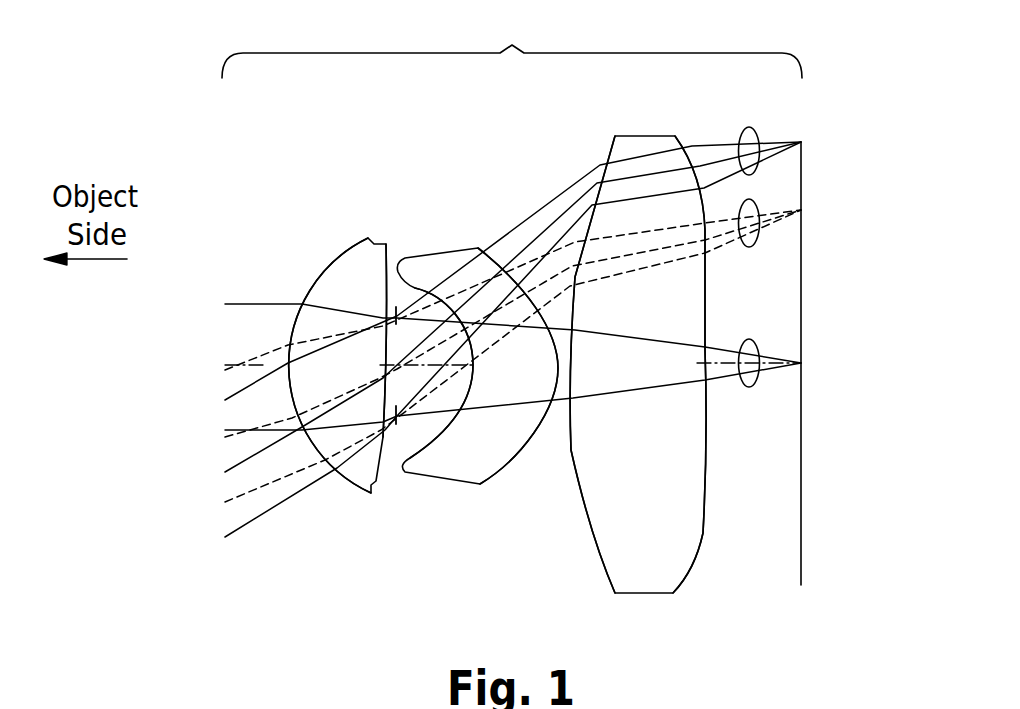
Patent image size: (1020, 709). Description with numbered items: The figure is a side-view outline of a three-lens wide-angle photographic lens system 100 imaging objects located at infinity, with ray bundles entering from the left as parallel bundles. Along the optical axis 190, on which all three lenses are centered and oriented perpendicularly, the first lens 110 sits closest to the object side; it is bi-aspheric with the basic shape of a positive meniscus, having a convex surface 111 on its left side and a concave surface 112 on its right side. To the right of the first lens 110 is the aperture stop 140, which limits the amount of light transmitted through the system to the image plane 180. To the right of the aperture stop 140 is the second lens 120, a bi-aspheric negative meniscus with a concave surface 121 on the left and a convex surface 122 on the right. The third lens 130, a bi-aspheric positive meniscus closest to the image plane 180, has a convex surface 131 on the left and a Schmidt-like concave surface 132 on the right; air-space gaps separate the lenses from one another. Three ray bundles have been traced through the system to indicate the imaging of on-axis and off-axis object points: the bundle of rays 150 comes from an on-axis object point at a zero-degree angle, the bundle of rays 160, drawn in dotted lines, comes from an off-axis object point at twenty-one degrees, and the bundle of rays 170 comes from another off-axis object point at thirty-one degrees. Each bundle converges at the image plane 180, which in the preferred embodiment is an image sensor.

The lens system 100 is at (512, 45).
The first lens 110 is at (360, 267).
The surface of the first lens 111 is at (320, 272).
The surface of the first lens 112 is at (384, 250).
The second lens 120 is at (453, 263).
The surface of the second lens 121 is at (385, 297).
The surface of the second lens 122 is at (502, 262).
The third lens 130 is at (630, 147).
The surface of the third lens 131 is at (577, 218).
The surface of the third lens 132 is at (702, 200).
The aperture stop 140 is at (397, 424).
The bundle of rays 150 is at (757, 390).
The bundle of rays 160 is at (757, 249).
The bundle of rays 170 is at (757, 177).
The image plane 180 is at (801, 510).
The optical axis 190 is at (247, 364).